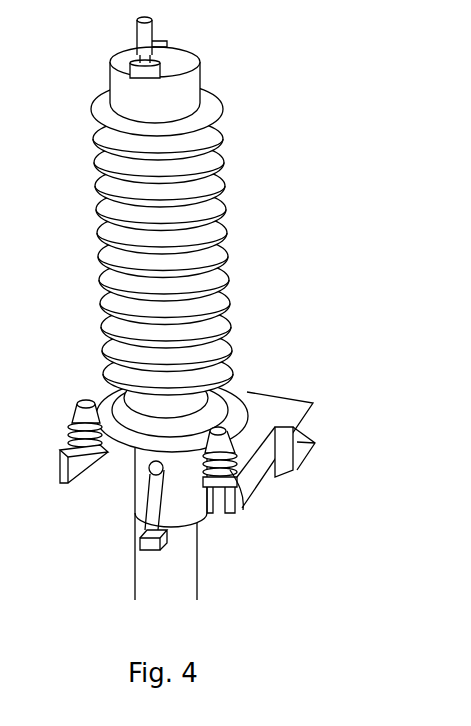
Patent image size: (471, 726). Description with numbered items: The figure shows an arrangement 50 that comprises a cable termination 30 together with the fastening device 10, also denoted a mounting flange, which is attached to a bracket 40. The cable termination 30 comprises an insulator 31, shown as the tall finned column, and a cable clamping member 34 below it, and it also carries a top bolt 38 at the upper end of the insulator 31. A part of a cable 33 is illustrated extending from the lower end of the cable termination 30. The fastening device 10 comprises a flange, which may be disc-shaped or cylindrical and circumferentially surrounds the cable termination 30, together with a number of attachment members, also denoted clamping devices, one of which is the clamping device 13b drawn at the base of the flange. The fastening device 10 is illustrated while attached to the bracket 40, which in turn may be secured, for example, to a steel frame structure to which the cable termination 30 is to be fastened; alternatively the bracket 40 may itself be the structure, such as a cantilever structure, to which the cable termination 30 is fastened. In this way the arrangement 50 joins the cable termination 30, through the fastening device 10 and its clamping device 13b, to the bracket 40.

The fastening device 10 is at (245, 386).
The insulator 31 is at (230, 228).
The top bolt 38 is at (137, 42).
The arrangement 50 is at (281, 118).
The cable 33 is at (178, 568).
The cable clamping member 34 is at (140, 507).
The clamping device 13b is at (238, 476).
The bracket 40 is at (300, 408).
The cable termination 30 is at (123, 545).